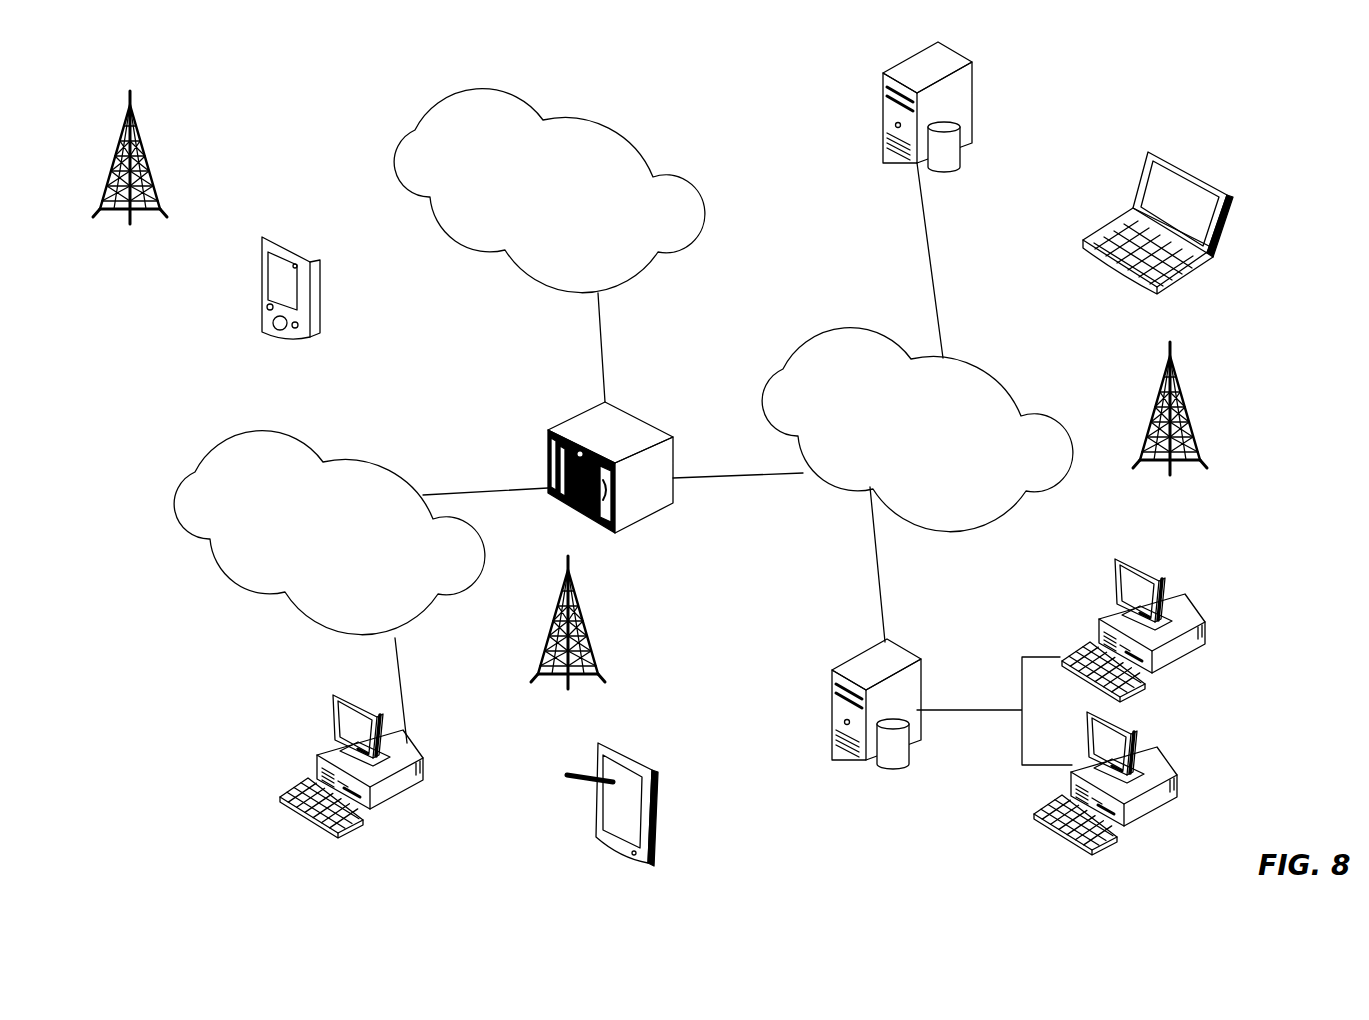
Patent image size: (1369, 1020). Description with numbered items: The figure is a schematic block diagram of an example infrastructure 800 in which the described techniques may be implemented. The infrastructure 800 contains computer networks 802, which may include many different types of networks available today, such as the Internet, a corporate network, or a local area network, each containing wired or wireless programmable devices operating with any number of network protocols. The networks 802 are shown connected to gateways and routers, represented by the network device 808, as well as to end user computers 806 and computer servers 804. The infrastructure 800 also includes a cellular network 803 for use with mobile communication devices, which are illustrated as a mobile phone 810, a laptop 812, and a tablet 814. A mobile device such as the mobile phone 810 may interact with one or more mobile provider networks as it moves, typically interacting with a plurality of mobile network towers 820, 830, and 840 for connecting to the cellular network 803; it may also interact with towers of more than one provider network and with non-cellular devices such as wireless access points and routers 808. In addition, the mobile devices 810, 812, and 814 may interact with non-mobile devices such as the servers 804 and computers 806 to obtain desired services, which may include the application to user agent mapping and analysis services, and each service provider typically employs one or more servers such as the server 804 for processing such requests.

The infrastructure 800 is at (1062, 145).
The computer networks 802 is at (308, 445).
The cellular network 803 is at (593, 122).
The computer servers 804 is at (888, 98).
The end user computers 806 is at (417, 760).
The gateways and routers 808 is at (633, 413).
The mobile phone 810 is at (293, 243).
The laptop 812 is at (1202, 177).
The tablet 814 is at (637, 757).
The mobile network tower 820 is at (568, 637).
The mobile network tower 830 is at (1170, 425).
The mobile network tower 840 is at (130, 173).